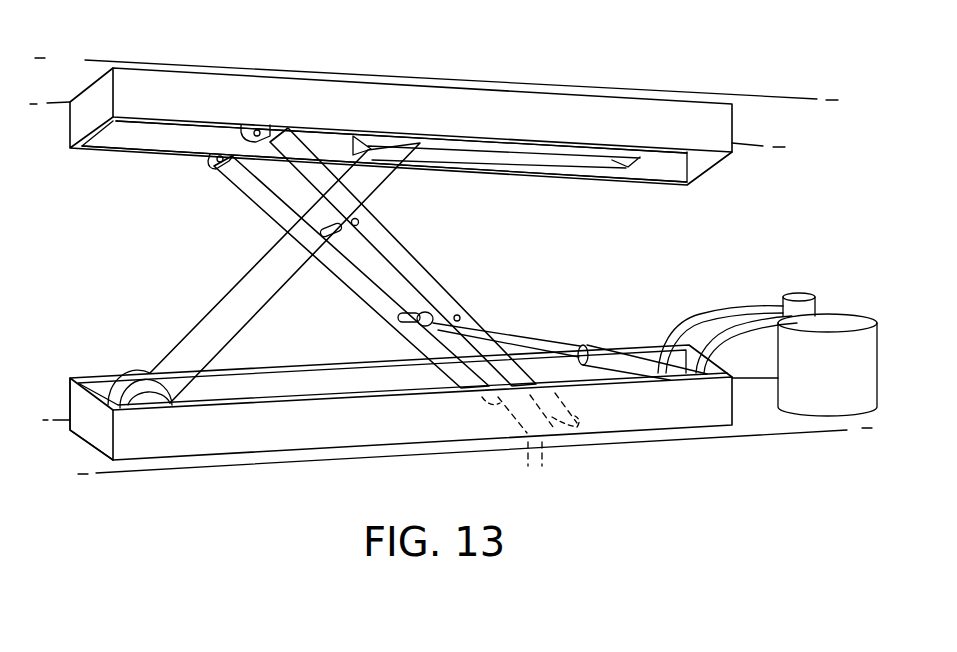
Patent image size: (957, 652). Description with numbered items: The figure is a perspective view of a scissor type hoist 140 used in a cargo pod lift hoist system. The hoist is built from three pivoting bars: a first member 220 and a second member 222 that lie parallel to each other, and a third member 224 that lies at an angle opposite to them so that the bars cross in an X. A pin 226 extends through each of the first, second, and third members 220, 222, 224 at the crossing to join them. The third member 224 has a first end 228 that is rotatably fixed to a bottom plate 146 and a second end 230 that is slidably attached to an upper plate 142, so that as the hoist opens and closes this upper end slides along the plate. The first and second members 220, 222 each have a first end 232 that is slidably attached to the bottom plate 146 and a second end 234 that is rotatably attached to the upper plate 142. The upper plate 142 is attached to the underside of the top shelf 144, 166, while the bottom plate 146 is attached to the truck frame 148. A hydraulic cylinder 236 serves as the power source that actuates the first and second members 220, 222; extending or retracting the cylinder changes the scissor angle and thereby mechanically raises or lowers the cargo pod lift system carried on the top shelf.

The scissor type hoist 140 is at (692, 73).
The upper plate 142 is at (172, 97).
The top shelf 144 is at (497, 95).
The top shelf 166 is at (497, 95).
The bottom plate 146 is at (659, 418).
The truck frame 148 is at (77, 450).
The first member 220 is at (402, 263).
The second member 222 is at (257, 196).
The third member 224 is at (243, 297).
The pin 226 is at (339, 239).
The first end of third member 228 is at (163, 377).
The second end of third member 230 is at (341, 131).
The first end of first and second members 232 is at (530, 447).
The second end of first and second members 234 is at (268, 124).
The hydraulic cylinder 236 is at (633, 363).